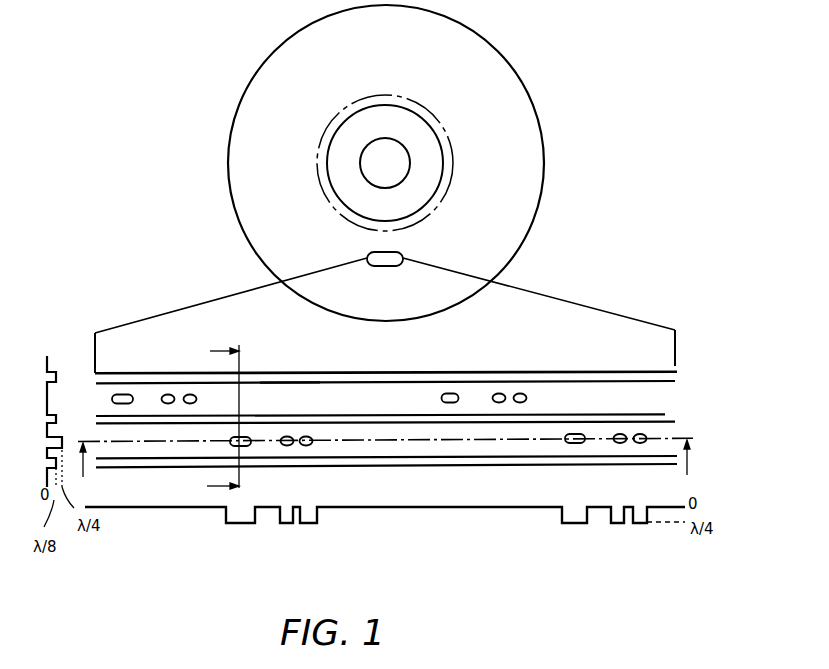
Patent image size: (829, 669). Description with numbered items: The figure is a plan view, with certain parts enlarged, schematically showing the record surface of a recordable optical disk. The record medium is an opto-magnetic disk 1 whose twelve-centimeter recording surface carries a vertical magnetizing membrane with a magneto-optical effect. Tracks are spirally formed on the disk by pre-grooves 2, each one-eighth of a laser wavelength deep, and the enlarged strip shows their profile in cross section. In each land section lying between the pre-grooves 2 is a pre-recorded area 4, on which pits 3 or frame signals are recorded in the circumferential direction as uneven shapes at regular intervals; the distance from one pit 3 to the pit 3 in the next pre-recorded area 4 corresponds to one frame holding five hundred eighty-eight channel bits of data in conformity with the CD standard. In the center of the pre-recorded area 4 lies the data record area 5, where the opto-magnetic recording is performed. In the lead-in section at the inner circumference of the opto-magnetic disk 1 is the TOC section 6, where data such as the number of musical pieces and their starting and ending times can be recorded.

The opto-magnetic disk 1 is at (513, 82).
The pre-groove 2 is at (660, 460).
The pit 3 is at (185, 397).
The pre-recorded area 4 is at (190, 388).
The data record area 5 is at (287, 390).
The TOC section 6 is at (447, 163).